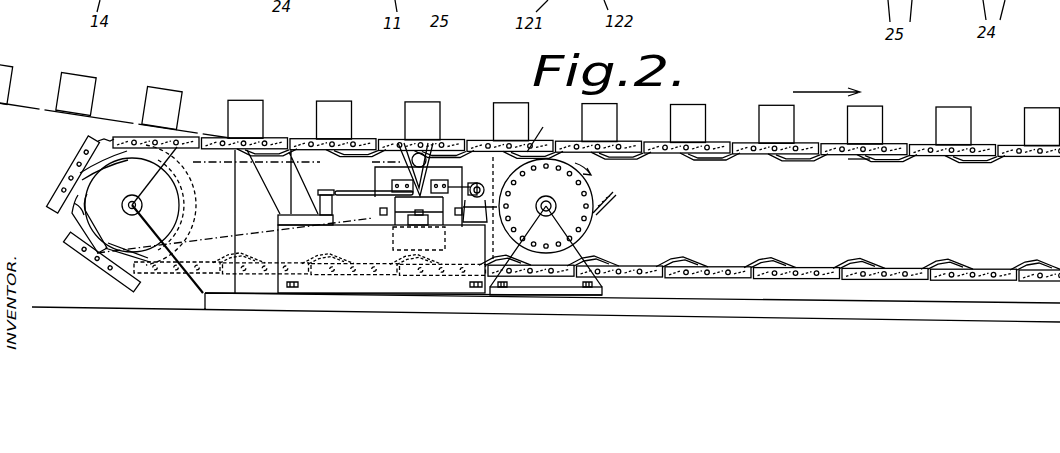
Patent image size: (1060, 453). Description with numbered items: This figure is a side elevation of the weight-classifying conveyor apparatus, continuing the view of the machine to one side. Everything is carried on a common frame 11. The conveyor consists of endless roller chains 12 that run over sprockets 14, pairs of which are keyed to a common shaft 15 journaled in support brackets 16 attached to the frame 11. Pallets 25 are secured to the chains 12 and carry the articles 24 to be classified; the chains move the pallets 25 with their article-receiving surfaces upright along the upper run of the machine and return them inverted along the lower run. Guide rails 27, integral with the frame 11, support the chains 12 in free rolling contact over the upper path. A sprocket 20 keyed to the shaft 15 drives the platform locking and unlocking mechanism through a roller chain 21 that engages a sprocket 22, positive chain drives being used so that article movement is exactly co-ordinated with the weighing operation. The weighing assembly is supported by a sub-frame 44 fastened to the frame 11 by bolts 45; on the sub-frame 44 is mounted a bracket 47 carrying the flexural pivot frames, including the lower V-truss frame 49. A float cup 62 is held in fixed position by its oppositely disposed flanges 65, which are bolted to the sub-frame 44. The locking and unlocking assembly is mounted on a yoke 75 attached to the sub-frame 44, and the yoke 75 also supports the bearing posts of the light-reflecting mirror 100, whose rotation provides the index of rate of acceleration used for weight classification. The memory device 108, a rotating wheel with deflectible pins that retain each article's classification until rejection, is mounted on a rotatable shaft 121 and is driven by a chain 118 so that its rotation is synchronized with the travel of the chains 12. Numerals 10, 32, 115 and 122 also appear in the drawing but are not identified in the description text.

The machine frame housing 10 is at (465, 147).
The common frame 11 is at (840, 168).
The endless roller chains 12 is at (66, 221).
The sprocket 14 is at (118, 260).
The shaft 15 is at (142, 205).
The support bracket 16 is at (190, 287).
The sprocket 20 is at (80, 265).
The roller chain 21 is at (276, 233).
The sprocket 22 is at (494, 177).
The articles 24 is at (320, 109).
The pallets 25 is at (389, 138).
The guide rails 27 is at (859, 158).
The pusher dogs 32 is at (70, 186).
The sub-frame 44 is at (355, 278).
The bolts 45 is at (295, 288).
The bracket 47 is at (275, 186).
The lower frame 49 is at (370, 193).
The float cup 62 is at (406, 212).
The flanges 65 is at (423, 223).
The yoke 75 is at (378, 208).
The light-reflecting mirror 100 is at (428, 143).
The memory device 108 is at (588, 179).
The feed chute 115 is at (15, 108).
The chain 118 is at (546, 132).
The rotatable shaft 121 is at (557, 212).
The pawl 122 is at (593, 218).